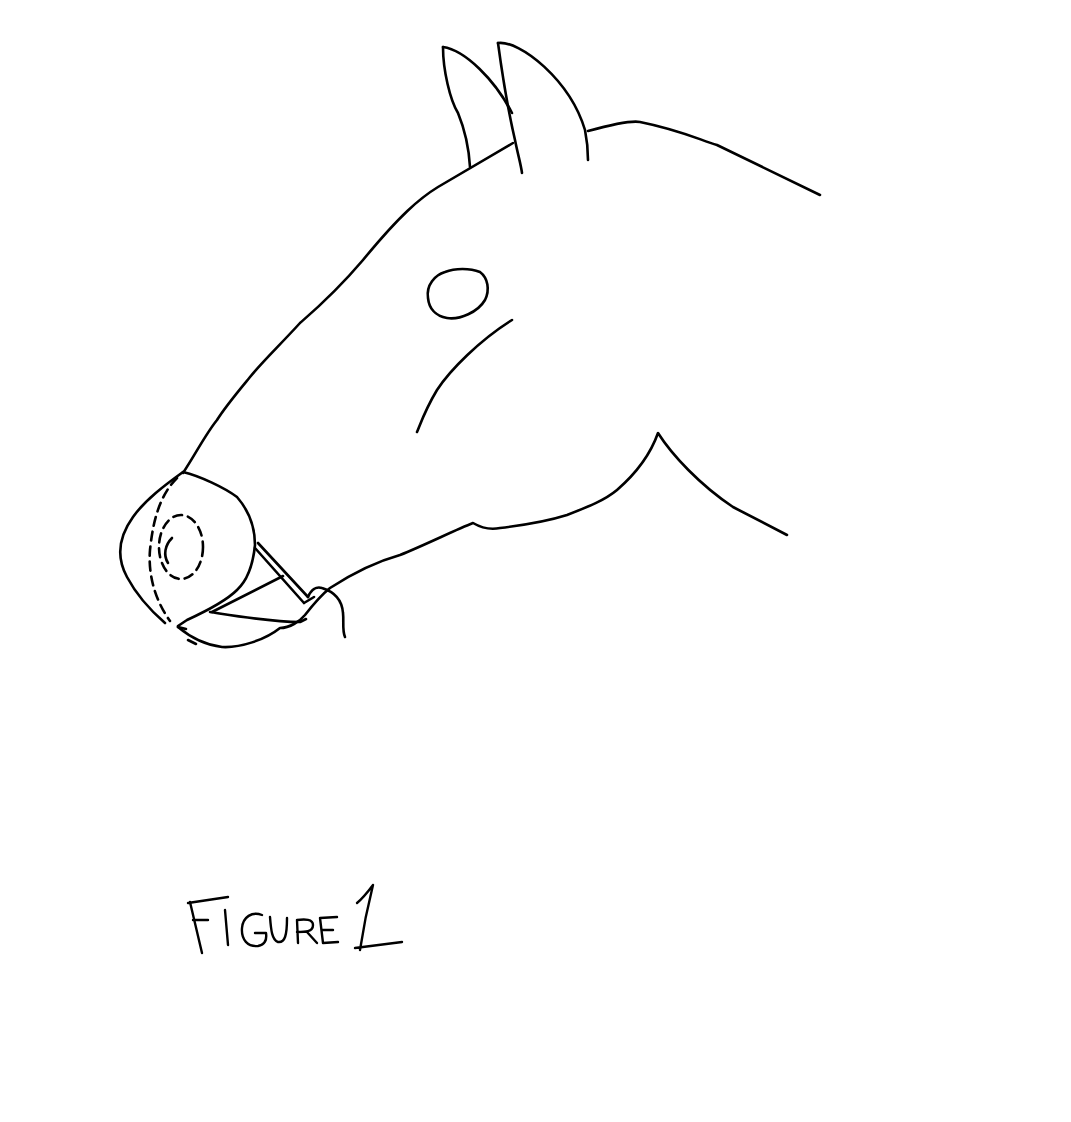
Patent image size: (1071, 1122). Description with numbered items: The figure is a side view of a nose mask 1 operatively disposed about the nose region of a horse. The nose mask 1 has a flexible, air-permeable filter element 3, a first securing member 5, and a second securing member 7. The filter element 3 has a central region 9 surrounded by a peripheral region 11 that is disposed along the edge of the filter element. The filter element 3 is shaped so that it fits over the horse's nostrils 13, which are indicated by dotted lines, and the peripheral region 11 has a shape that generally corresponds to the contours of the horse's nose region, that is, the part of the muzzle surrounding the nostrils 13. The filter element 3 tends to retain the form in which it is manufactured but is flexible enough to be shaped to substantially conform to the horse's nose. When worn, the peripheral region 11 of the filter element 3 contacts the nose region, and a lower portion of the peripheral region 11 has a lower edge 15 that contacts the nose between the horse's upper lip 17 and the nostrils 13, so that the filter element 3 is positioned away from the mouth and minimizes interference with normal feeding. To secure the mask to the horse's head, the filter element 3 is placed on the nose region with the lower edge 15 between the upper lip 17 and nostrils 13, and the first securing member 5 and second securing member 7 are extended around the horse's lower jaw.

The nose mask 1 is at (218, 590).
The filter element 3 is at (131, 521).
The first securing member 5 is at (287, 627).
The second securing member 7 is at (345, 637).
The central region 9 is at (149, 511).
The peripheral region 11 is at (195, 403).
The nostrils 13 is at (172, 538).
The lower edge 15 is at (181, 642).
The upper lip 17 is at (205, 713).